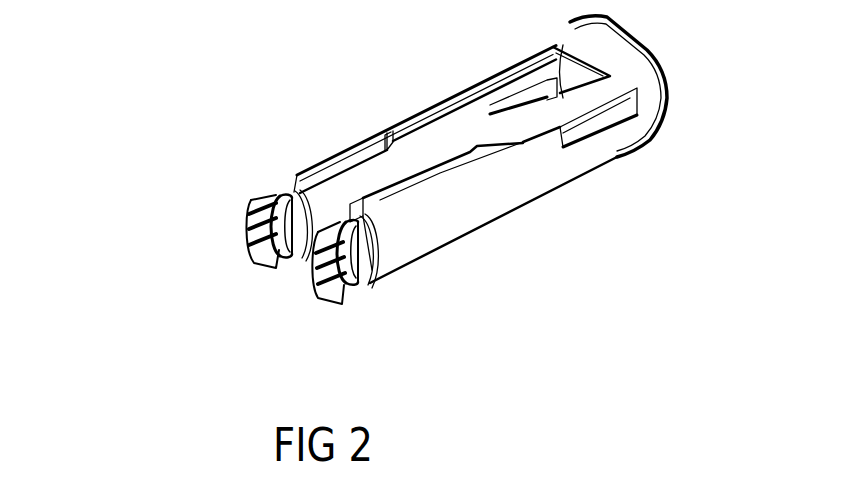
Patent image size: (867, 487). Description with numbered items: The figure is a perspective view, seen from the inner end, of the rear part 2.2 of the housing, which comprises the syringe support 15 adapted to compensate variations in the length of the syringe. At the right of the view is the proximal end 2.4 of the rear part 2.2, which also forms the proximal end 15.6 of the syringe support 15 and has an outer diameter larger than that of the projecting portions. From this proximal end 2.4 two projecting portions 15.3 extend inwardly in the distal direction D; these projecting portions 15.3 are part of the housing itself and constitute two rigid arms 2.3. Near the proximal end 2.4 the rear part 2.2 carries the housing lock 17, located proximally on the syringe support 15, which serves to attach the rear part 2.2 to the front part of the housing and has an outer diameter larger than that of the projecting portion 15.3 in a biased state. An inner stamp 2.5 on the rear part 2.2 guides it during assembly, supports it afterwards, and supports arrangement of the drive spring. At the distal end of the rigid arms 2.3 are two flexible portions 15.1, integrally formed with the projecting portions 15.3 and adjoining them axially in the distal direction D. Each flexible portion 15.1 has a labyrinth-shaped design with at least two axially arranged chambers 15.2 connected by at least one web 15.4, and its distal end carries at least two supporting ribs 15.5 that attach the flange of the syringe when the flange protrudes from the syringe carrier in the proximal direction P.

The rear part 2.2 is at (710, 116).
The rigid arms 2.3 is at (474, 165).
The proximal end 2.4 is at (710, 116).
The inner stamp 2.5 is at (346, 162).
The syringe support 15 is at (235, 259).
The flexible portions 15.1 is at (235, 259).
The chambers 15.2 is at (235, 259).
The projecting portions 15.3 is at (430, 133).
The web 15.4 is at (235, 259).
The supporting ribs 15.5 is at (130, 205).
The proximal end of the syringe support 15.6 is at (645, 120).
The housing lock 17 is at (537, 92).
The proximal direction P is at (691, 31).
The distal direction D is at (175, 320).